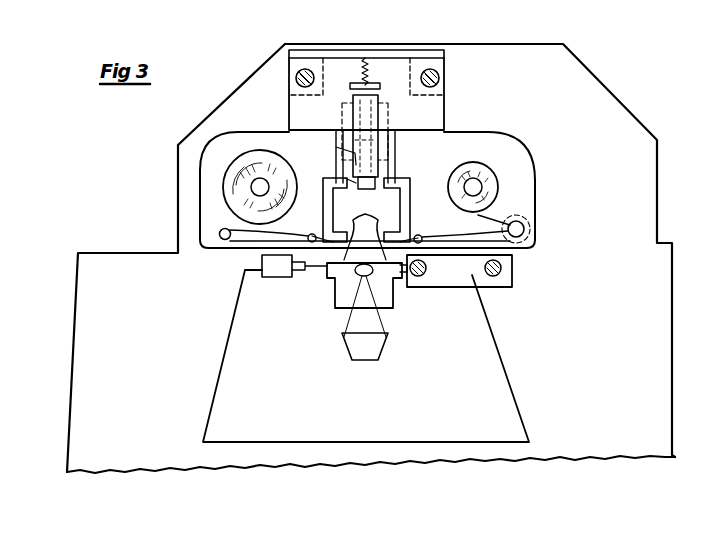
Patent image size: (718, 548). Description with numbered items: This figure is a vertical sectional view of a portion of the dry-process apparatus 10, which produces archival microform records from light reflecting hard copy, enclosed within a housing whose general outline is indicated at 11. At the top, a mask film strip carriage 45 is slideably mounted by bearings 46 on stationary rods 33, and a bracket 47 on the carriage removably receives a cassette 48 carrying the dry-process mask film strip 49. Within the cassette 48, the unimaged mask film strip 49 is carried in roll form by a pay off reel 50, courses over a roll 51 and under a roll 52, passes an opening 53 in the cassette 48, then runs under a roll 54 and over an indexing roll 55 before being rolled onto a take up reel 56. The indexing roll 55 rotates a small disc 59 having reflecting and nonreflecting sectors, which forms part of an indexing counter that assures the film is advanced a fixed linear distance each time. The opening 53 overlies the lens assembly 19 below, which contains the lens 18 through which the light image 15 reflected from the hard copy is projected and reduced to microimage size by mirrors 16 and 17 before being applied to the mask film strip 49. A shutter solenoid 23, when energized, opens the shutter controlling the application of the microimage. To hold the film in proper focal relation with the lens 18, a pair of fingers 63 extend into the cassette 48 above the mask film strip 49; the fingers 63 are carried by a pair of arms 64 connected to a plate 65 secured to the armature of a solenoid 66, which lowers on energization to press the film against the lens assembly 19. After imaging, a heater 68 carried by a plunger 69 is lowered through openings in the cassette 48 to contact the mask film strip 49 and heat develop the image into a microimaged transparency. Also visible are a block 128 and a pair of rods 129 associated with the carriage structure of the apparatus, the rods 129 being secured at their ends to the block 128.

The dry-process apparatus 10 is at (643, 109).
The housing 11 is at (112, 253).
The light image 15 is at (348, 320).
The mirror 16 is at (510, 385).
The mirror 17 is at (363, 358).
The lens 18 is at (347, 281).
The lens assembly 19 is at (335, 302).
The shutter solenoid 23 is at (276, 277).
The stationary rods 33 is at (306, 69).
The mask film strip carriage 45 is at (346, 50).
The bearings 46 is at (289, 104).
The bracket 47 is at (445, 124).
The cassette 48 is at (523, 153).
The mask film strip 49 is at (240, 248).
The pay off reel 50 is at (255, 194).
The roll 51 is at (219, 236).
The roll 52 is at (308, 236).
The opening 53 is at (405, 230).
The roll 54 is at (423, 238).
The indexing roll 55 is at (525, 230).
The take up reel 56 is at (477, 184).
The disc 59 is at (530, 216).
The fingers 63 is at (365, 230).
The arms 64 is at (323, 203).
The plate 65 is at (388, 160).
The solenoid 66 is at (342, 112).
The heater 68 is at (345, 178).
The plunger 69 is at (343, 149).
The block 128 is at (480, 290).
The rods 129 is at (418, 287).